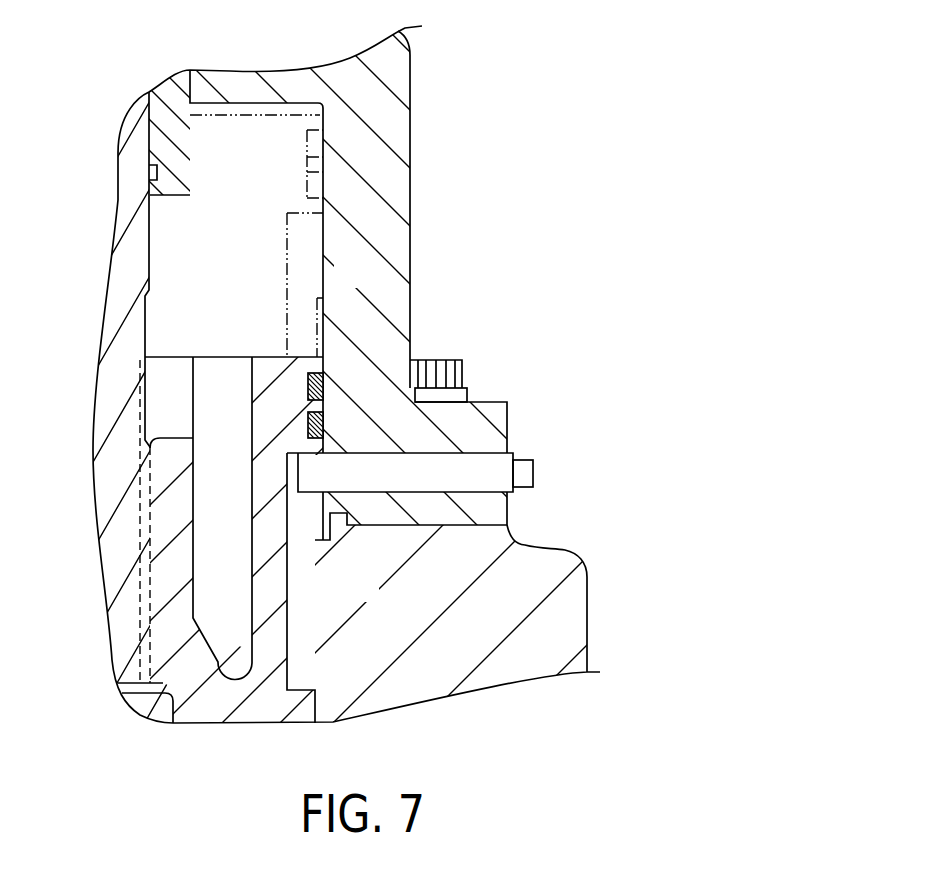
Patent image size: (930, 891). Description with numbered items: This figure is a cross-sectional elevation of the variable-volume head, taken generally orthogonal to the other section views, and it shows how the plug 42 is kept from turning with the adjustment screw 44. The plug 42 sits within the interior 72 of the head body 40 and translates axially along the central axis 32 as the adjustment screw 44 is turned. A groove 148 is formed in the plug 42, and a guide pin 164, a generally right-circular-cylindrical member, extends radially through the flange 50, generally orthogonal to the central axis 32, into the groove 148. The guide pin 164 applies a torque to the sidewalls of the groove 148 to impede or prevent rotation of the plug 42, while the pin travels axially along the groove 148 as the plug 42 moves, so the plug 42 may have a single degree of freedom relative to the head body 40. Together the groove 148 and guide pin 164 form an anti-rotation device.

The central axis 32 is at (93, 480).
The head body 40 is at (412, 142).
The plug 42 is at (263, 725).
The adjustment screw 44 is at (142, 413).
The flange 50 is at (507, 427).
The interior 72 is at (275, 290).
The groove 148 is at (288, 572).
The guide pin 164 is at (485, 482).